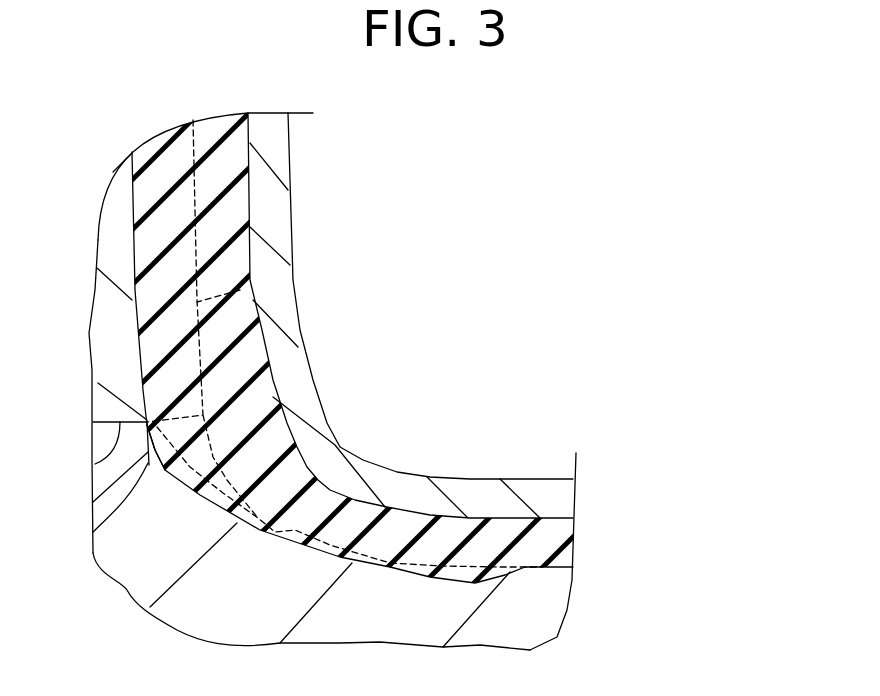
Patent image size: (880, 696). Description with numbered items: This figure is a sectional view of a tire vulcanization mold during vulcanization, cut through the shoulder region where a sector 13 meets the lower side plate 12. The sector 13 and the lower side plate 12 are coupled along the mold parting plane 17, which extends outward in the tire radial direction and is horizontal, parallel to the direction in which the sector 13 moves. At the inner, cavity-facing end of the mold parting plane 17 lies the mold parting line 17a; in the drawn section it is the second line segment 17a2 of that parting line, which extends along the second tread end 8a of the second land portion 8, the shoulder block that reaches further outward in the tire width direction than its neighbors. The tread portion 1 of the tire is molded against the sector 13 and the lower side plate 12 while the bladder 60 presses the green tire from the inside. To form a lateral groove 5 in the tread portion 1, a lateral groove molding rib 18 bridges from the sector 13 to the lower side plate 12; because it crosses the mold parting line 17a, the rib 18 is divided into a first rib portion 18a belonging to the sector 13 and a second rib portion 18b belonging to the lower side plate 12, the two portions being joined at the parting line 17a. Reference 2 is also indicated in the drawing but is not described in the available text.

The tread portion 1 is at (230, 170).
The second member 2 is at (523, 547).
The lateral groove 5 is at (193, 158).
The second land portion 8 is at (143, 313).
The second tread end 8a is at (93, 532).
The lower side plate 12 is at (167, 580).
The sector 13 is at (115, 248).
The mold parting plane 17 is at (95, 464).
The mold parting line 17a is at (317, 384).
The second line segment 17a2 is at (146, 422).
The lateral groove molding rib 18 is at (350, 397).
The first rib portion 18a is at (240, 290).
The second rib portion 18b is at (275, 532).
The bladder 60 is at (423, 492).